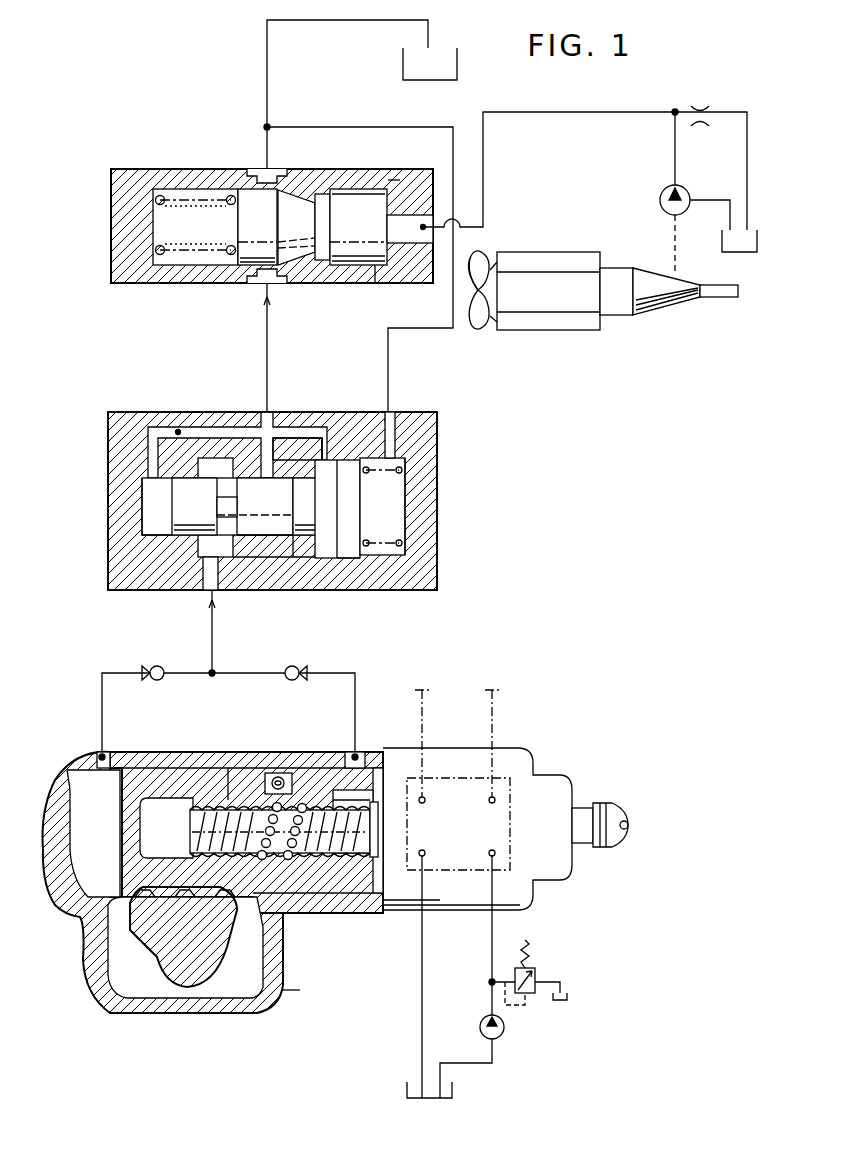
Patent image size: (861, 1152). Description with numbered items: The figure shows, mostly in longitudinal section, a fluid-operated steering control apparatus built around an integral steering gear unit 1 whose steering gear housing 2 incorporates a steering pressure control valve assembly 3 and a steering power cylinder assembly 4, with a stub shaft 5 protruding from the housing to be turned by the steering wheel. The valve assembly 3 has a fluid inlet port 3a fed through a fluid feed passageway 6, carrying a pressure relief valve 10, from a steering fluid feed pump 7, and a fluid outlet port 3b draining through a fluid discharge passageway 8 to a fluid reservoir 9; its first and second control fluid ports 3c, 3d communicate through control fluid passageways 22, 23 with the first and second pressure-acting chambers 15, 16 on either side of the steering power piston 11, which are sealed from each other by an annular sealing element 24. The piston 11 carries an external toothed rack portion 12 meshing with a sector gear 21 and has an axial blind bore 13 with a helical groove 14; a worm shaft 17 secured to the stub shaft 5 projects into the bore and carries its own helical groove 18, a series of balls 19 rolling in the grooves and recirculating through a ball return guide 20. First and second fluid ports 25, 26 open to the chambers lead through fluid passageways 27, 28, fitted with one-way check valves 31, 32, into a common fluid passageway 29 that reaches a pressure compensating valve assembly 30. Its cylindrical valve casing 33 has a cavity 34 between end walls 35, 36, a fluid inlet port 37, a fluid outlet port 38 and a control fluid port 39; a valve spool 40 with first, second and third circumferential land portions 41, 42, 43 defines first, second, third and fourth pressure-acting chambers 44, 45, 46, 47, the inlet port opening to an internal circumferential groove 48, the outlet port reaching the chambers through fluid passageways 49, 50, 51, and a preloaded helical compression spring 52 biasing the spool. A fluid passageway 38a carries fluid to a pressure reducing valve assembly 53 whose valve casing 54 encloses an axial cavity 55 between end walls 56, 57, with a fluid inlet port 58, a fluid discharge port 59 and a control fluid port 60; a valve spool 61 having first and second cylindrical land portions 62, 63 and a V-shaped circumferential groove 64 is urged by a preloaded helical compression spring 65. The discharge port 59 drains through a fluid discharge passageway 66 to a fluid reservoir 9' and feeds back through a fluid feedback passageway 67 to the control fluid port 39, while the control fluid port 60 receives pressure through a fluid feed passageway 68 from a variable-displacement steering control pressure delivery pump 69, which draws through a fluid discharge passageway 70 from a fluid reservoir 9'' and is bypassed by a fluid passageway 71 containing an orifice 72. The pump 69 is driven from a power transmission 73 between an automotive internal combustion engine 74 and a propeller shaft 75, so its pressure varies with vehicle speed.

The integral steering gear unit 1 is at (326, 988).
The steering gear housing 2 is at (530, 758).
The steering pressure control valve assembly 3 is at (518, 810).
The fluid inlet port 3a is at (489, 853).
The fluid outlet port 3b is at (425, 851).
The first control fluid port 3c is at (490, 804).
The second control fluid port 3d is at (426, 802).
The steering power cylinder assembly 4 is at (84, 931).
The stub shaft 5 is at (603, 847).
The fluid feed passageway 6 is at (490, 955).
The steering fluid feed pump 7 is at (480, 1026).
The fluid discharge passageway 8 is at (422, 976).
The fluid reservoir 9 is at (445, 1081).
The fluid reservoir 9' is at (447, 63).
The fluid reservoir 9'' is at (745, 259).
The pressure relief valve 10 is at (546, 953).
The steering power piston 11 is at (143, 768).
The external toothed rack portion 12 is at (250, 895).
The axial blind bore 13 is at (166, 828).
The continuous helical groove 14 is at (205, 805).
The first pressure-acting chamber 15 is at (93, 833).
The second pressure-acting chamber 16 is at (372, 895).
The worm shaft 17 is at (335, 848).
The continuous helical groove 18 is at (228, 768).
The series of balls 19 is at (304, 800).
The ball return guide 20 is at (278, 772).
The sector gear 21 is at (175, 975).
The control fluid passageway 22 is at (498, 712).
The control fluid passageway 23 is at (428, 712).
The annular sealing element 24 is at (322, 912).
The first fluid port 25 is at (100, 752).
The second fluid port 26 is at (358, 752).
The fluid passageway 27 is at (102, 708).
The fluid passageway 28 is at (355, 678).
The common fluid passageway 29 is at (213, 632).
The pressure compensating valve assembly 30 is at (139, 398).
The one-way check valve 31 is at (162, 678).
The one-way check valve 32 is at (288, 678).
The cylindrical valve casing 33 is at (394, 590).
The cavity 34 is at (258, 540).
The end wall 35 is at (108, 495).
The end wall 36 is at (437, 500).
The fluid inlet port 37 is at (206, 590).
The fluid outlet port 38 is at (263, 418).
The fluid passageway 38a is at (268, 325).
The control fluid port 39 is at (390, 418).
The valve spool 40 is at (283, 530).
The first circumferential land portion 41 is at (194, 506).
The second circumferential land portion 42 is at (315, 506).
The third circumferential land portion 43 is at (348, 560).
The first pressure-acting chamber 44 is at (280, 492).
The second pressure-acting chamber 45 is at (155, 522).
The third variable-volume pressure-acting chamber 46 is at (333, 468).
The fourth pressure-acting chamber 47 is at (400, 532).
The internal circumferential groove 48 is at (215, 456).
The fluid passageway 49 is at (280, 436).
The fluid passageway 50 is at (178, 430).
The fluid passageway 51 is at (326, 436).
The preloaded helical compression spring 52 is at (382, 506).
The pressure reducing valve assembly 53 is at (135, 159).
The valve casing 54 is at (111, 234).
The axial cavity 55 is at (358, 202).
The end wall 56 is at (375, 283).
The end wall 57 is at (153, 230).
The fluid inlet port 58 is at (258, 282).
The fluid discharge port 59 is at (258, 178).
The control fluid port 60 is at (405, 233).
The valve spool 61 is at (396, 175).
The first cylindrical land portion 62 is at (358, 227).
The second cylindrical land portion 63 is at (257, 227).
The circumferential groove 64 is at (303, 196).
The preloaded helical compression spring 65 is at (229, 206).
The fluid discharge passageway 66 is at (268, 73).
The fluid feedback passageway 67 is at (453, 158).
The fluid feed passageway 68 is at (563, 112).
The variable-displacement steering control pressure delivery pump 69 is at (660, 205).
The fluid discharge passageway 70 is at (706, 200).
The fluid passageway 71 is at (730, 112).
The orifice 72 is at (683, 93).
The power transmission 73 is at (660, 315).
The automotive internal combustion engine 74 is at (548, 330).
The propeller shaft 75 is at (706, 297).